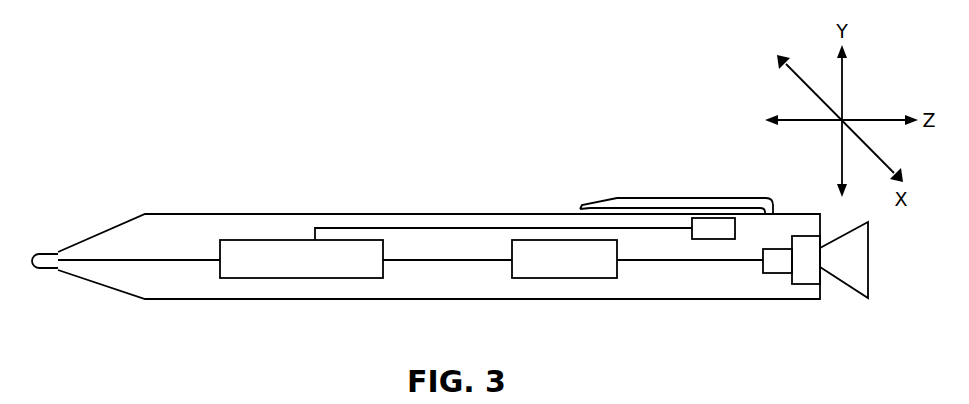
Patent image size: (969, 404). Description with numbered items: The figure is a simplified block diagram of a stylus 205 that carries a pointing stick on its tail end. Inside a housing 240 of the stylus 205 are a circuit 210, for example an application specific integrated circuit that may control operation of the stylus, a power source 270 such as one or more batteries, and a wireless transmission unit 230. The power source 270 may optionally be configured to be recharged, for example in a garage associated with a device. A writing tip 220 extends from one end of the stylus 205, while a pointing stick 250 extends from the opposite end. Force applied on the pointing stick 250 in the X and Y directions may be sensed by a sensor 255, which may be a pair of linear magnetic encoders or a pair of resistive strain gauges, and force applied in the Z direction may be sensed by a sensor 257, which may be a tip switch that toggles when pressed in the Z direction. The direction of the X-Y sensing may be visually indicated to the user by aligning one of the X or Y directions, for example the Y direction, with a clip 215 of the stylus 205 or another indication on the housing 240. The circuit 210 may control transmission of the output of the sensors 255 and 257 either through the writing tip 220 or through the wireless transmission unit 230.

The stylus 205 is at (458, 185).
The housing 240 is at (204, 213).
The writing tip 220 is at (58, 252).
The circuit 210 is at (281, 240).
The power source 270 is at (572, 240).
The clip 215 is at (706, 198).
The wireless transmission unit 230 is at (715, 239).
The sensor 257 is at (770, 273).
The sensor 255 is at (806, 284).
The pointing stick 250 is at (857, 290).